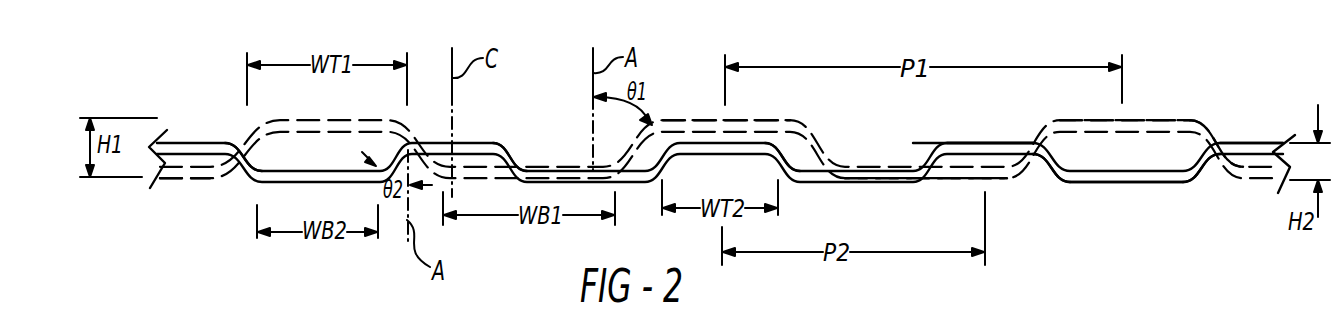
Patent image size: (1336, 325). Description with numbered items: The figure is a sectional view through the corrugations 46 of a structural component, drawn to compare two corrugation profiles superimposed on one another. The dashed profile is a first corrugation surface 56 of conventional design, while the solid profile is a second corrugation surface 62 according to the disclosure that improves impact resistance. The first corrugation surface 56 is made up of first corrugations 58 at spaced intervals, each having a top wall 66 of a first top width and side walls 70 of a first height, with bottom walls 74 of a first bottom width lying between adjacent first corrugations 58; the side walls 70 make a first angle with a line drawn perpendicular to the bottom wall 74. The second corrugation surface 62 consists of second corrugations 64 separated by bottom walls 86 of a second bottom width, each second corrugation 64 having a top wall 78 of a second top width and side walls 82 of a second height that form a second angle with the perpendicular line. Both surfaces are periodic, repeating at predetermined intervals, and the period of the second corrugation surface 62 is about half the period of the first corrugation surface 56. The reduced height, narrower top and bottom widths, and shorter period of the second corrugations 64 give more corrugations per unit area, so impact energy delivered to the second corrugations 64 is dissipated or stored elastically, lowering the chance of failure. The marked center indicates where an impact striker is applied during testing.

The corrugation 46 is at (1000, 143).
The first corrugation surface 56 is at (182, 180).
The first corrugation 58 is at (1208, 132).
The second corrugation surface 62 is at (1256, 143).
The second corrugation 64 is at (522, 158).
The top wall 66 is at (787, 122).
The side wall 70 is at (243, 130).
The bottom wall 74 is at (960, 182).
The top wall 78 is at (967, 143).
The side wall 82 is at (1050, 173).
The bottom wall 86 is at (1130, 183).